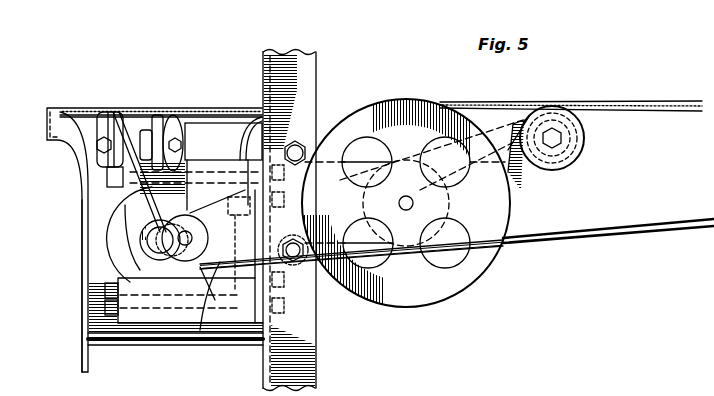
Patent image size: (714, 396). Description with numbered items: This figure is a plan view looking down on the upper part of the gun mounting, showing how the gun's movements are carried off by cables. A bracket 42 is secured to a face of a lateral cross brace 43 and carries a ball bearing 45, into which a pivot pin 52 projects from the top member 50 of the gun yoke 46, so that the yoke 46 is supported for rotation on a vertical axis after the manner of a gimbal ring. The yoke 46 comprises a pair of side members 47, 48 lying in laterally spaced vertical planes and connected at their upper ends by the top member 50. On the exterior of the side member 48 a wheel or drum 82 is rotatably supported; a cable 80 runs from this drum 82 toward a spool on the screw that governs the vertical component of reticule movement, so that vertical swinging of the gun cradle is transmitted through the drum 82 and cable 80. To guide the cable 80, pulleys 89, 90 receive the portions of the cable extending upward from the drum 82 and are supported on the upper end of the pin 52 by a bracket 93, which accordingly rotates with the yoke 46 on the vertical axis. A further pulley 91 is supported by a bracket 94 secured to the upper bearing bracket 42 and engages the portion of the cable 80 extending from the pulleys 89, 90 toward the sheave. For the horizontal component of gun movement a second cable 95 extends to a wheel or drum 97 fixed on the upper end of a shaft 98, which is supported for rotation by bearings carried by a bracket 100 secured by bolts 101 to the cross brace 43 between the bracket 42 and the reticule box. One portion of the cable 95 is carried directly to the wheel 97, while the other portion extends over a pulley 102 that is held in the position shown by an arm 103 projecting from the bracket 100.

The bracket 42 is at (116, 279).
The lateral cross brace 43 is at (308, 363).
The ball bearing 45 is at (128, 243).
The gun yoke 46 is at (80, 338).
The side member 47 is at (148, 335).
The side member 48 is at (218, 140).
The top member 50 is at (93, 170).
The pivot pin 52 is at (152, 250).
The cable 80 is at (133, 187).
The wheel or drum 82 is at (197, 108).
The pulley 89 is at (112, 112).
The pulley 90 is at (158, 114).
The pulley 91 is at (186, 238).
The bracket 93 is at (124, 203).
The bracket 94 is at (220, 270).
The cable 95 is at (656, 112).
The wheel or drum 97 is at (493, 215).
The shaft 98 is at (413, 198).
The bracket 100 is at (360, 232).
The bolts 101 is at (302, 143).
The pulley 102 is at (572, 158).
The arm 103 is at (510, 150).